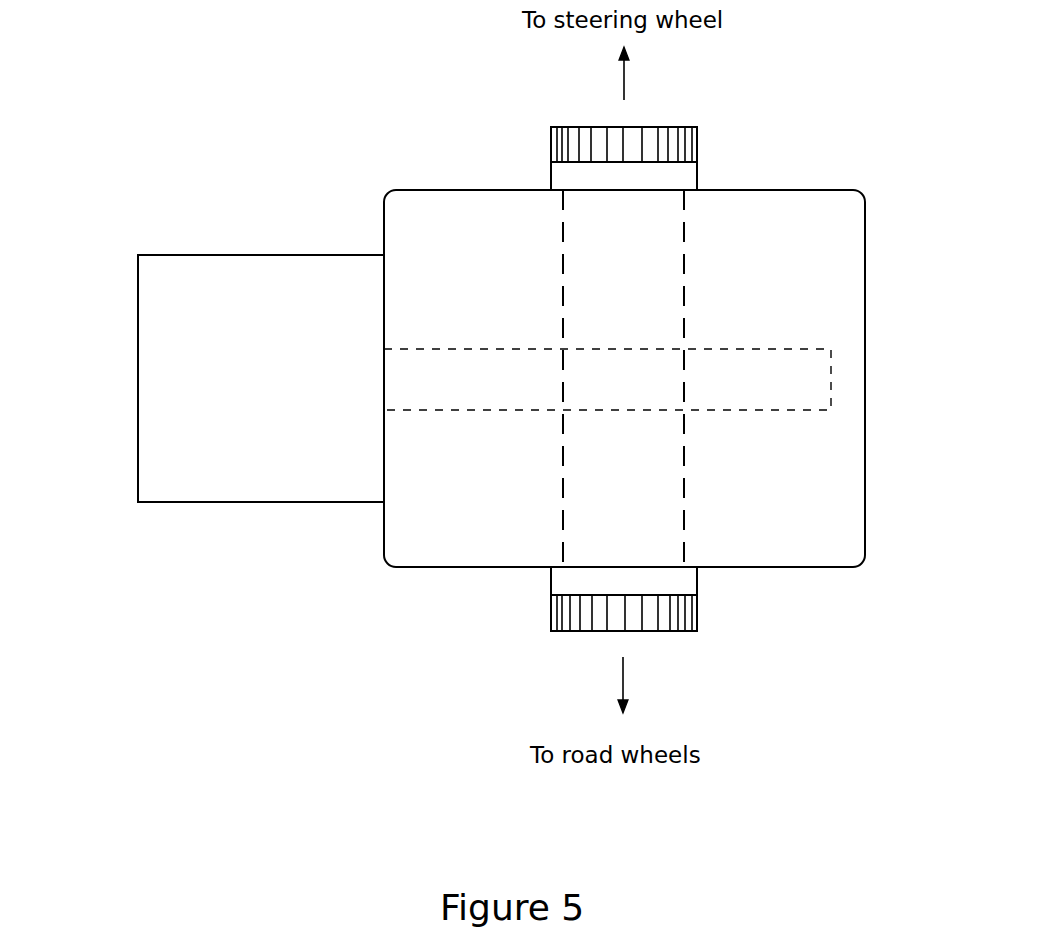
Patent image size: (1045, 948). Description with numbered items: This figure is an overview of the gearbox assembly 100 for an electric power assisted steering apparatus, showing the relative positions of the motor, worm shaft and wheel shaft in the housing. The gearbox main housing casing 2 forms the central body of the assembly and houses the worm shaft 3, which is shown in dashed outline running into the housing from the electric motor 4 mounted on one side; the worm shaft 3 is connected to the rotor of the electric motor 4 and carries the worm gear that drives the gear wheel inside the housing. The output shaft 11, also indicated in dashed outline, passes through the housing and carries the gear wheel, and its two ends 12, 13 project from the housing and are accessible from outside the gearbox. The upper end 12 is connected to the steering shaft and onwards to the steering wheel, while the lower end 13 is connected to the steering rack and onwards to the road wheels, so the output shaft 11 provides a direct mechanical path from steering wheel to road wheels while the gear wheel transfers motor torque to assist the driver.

The gearbox assembly 100 is at (363, 585).
The gearbox main housing casing 2 is at (865, 515).
The worm shaft 3 is at (790, 349).
The electric motor 4 is at (138, 455).
The output shaft 11 is at (685, 257).
The end of output shaft 12 is at (697, 154).
The end of output shaft 13 is at (697, 627).